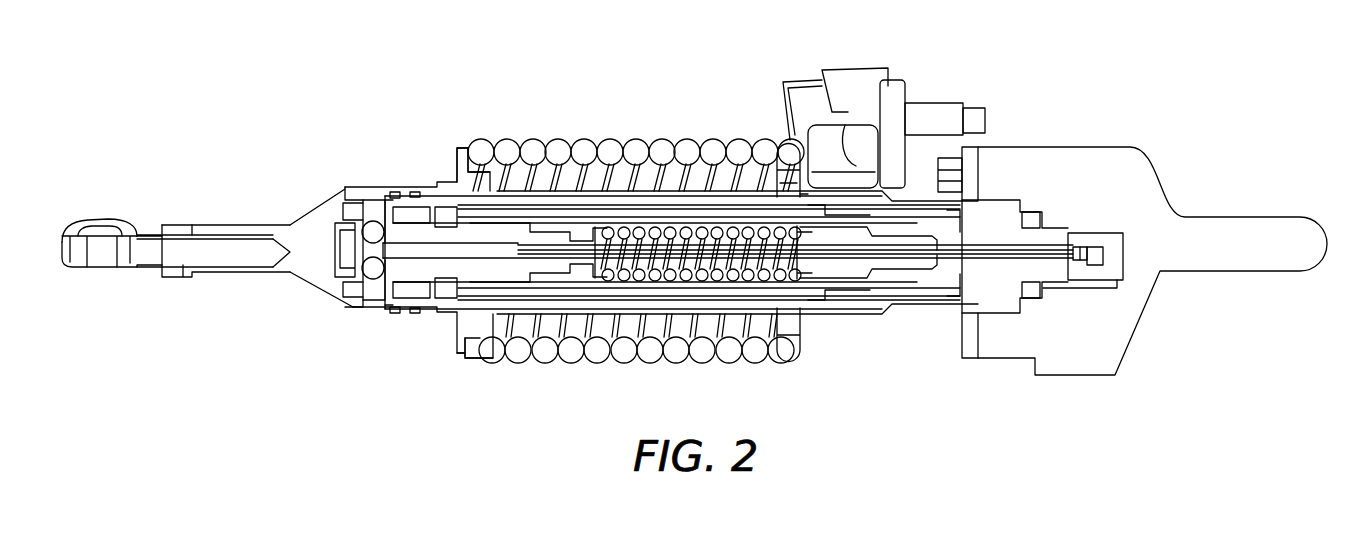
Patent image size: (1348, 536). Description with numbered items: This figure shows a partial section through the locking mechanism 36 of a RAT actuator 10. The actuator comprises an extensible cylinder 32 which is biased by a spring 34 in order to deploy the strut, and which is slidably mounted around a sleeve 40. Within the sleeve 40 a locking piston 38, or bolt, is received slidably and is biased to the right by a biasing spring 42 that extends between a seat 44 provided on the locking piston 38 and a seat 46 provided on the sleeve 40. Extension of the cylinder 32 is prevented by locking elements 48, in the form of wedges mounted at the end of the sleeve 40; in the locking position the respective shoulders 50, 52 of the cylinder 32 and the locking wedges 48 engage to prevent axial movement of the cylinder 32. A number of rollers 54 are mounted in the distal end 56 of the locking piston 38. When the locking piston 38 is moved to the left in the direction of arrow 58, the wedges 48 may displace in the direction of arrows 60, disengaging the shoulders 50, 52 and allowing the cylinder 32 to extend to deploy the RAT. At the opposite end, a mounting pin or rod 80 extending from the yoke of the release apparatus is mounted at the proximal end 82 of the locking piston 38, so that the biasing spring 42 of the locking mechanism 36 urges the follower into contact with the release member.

The actuator assembly 10 is at (656, 82).
The cylinder 32 is at (460, 185).
The spring 34 is at (530, 150).
The locking mechanism 36 is at (908, 382).
The locking piston 38 is at (905, 262).
The sleeve 40 is at (595, 212).
The biasing spring 42 is at (736, 281).
The seat 44 is at (800, 283).
The seat 46 is at (656, 228).
The locking elements 48 is at (364, 192).
The shoulder 50 is at (393, 313).
The shoulder 52 is at (408, 314).
The rollers 54 is at (360, 220).
The distal end 56 is at (312, 278).
The arrow 58 is at (452, 31).
The arrows 60 is at (373, 138).
The mounting pin 80 is at (1095, 266).
The proximal end 82 is at (1073, 268).